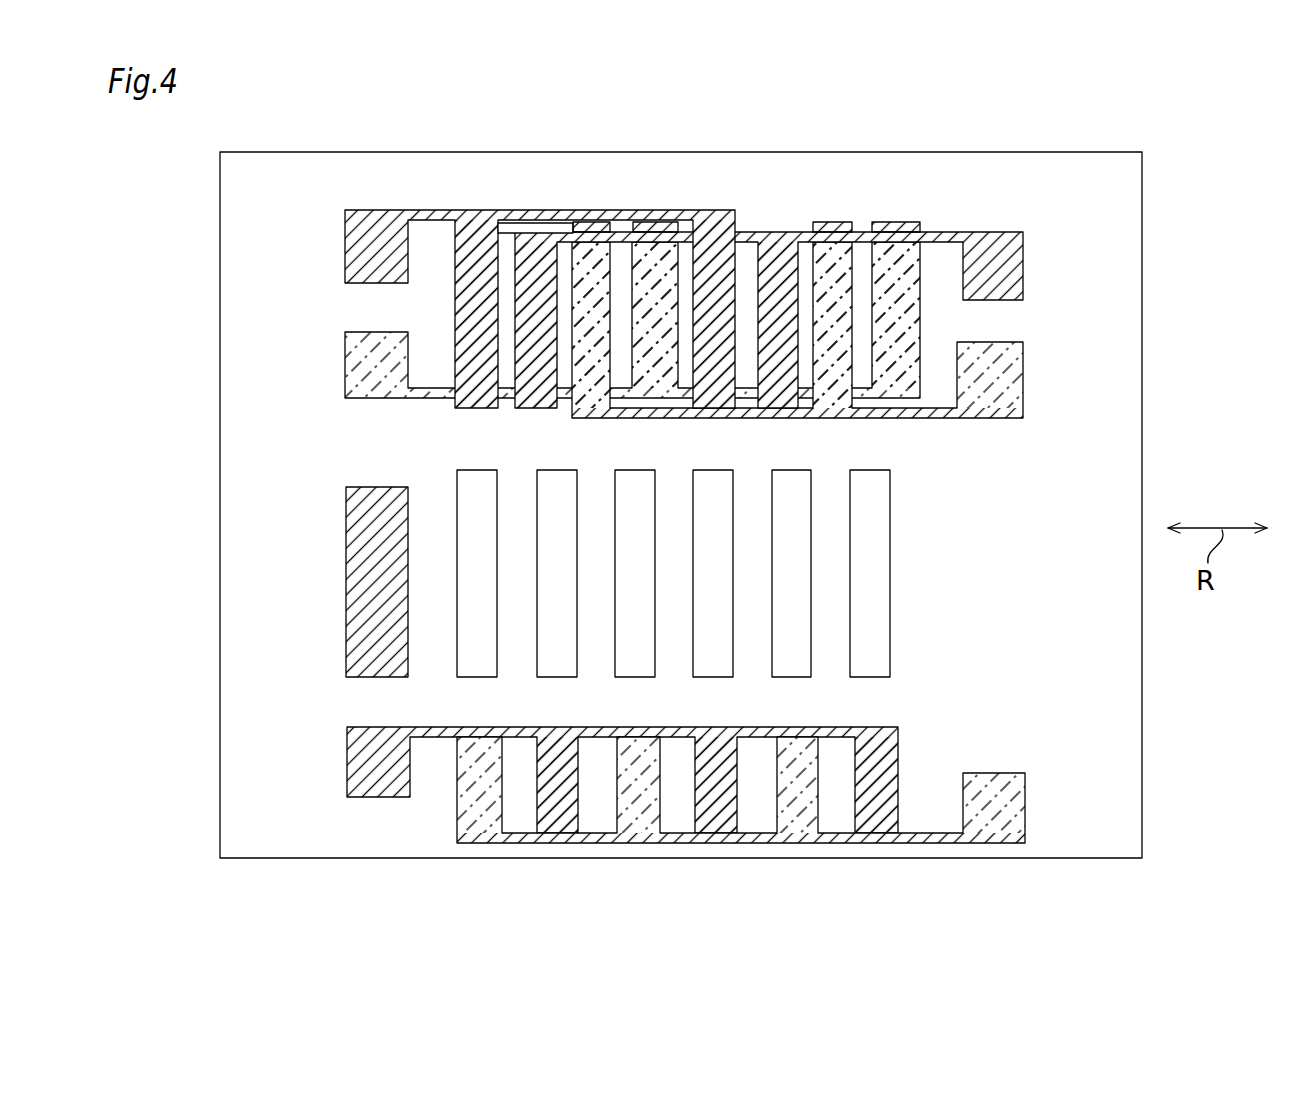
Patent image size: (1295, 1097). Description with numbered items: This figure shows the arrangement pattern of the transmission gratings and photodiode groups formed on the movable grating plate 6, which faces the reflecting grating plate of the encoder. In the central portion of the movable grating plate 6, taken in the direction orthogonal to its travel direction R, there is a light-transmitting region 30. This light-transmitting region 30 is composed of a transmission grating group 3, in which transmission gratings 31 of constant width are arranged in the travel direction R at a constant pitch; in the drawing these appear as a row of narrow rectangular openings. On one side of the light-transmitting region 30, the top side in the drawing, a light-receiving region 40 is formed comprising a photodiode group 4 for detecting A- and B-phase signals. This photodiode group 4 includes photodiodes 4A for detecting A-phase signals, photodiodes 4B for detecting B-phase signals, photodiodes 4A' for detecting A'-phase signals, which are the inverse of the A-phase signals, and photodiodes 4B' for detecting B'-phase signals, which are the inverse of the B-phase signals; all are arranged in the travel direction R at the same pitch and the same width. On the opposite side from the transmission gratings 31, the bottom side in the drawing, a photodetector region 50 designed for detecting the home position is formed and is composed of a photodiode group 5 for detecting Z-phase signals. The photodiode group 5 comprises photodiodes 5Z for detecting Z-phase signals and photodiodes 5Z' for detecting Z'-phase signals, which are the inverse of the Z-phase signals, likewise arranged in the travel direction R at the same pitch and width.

The transmission grating group 3 is at (722, 564).
The photodiode group 4 is at (691, 236).
The photodiodes for detecting A-phase signals 4A is at (598, 288).
The photodiodes for detecting B-phase signals 4B is at (656, 285).
The photodiodes for detecting A'-phase signals 4A' is at (716, 287).
The photodiodes for detecting B'-phase signals 4B' is at (777, 253).
The photodiode group 5 is at (668, 855).
The photodiodes for detecting Z-phase signals 5Z is at (635, 826).
The photodiodes for detecting Z'-phase signals 5Z' is at (717, 821).
The movable grating plate 6 is at (1148, 223).
The light-transmitting region 30 is at (770, 558).
The transmission gratings 31 is at (490, 579).
The light-receiving region 40 is at (1043, 290).
The photodetector region 50 is at (942, 737).